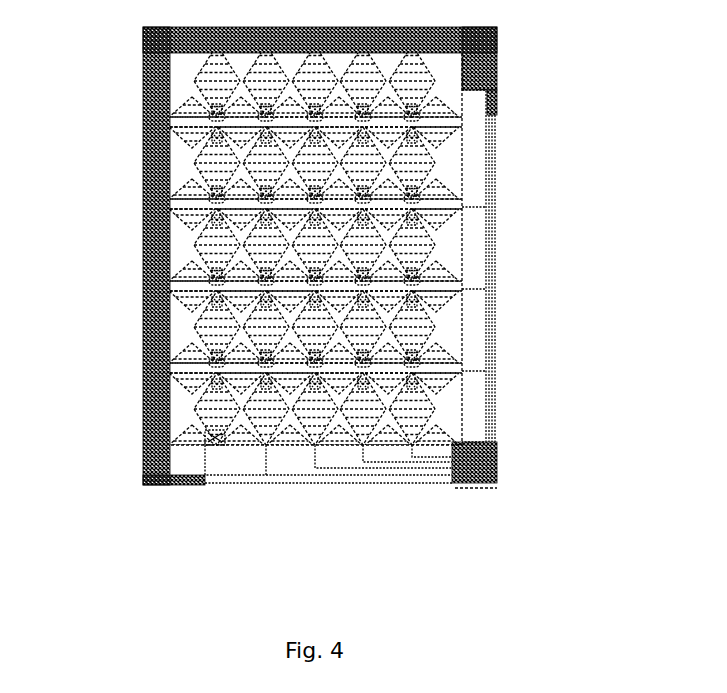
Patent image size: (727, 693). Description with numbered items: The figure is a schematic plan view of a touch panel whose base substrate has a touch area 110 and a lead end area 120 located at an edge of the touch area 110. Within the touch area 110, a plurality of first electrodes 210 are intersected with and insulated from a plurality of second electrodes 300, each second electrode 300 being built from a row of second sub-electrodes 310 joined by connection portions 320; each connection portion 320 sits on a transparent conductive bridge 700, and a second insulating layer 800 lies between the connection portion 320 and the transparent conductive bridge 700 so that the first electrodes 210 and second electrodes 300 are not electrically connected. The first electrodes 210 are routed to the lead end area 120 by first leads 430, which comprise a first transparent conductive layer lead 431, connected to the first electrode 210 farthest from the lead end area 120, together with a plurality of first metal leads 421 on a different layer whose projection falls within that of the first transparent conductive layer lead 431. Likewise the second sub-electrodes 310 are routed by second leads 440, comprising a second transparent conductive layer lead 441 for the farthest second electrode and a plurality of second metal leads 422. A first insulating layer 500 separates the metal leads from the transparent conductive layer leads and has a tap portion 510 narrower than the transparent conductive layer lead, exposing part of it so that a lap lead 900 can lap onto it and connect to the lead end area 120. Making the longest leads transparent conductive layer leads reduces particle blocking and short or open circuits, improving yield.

The touch area 110 is at (443, 77).
The lead end area 120 is at (500, 468).
The first electrode 210 is at (218, 240).
The second electrode 300 is at (242, 271).
The second sub-electrode 310 is at (195, 278).
The connection portion 320 is at (218, 292).
The transparent conductive bridge 700 is at (200, 356).
The second insulating layer 800 is at (218, 375).
The first insulating layer 500 is at (185, 452).
The first leads 430 is at (286, 493).
The first transparent conductive layer lead 431 is at (218, 440).
The first metal leads 421 is at (287, 485).
The tap portion 510 is at (414, 481).
The lap lead 900 is at (451, 484).
The second leads 440 is at (535, 266).
The second transparent conductive layer lead 441 is at (495, 395).
The second metal leads 422 is at (493, 440).